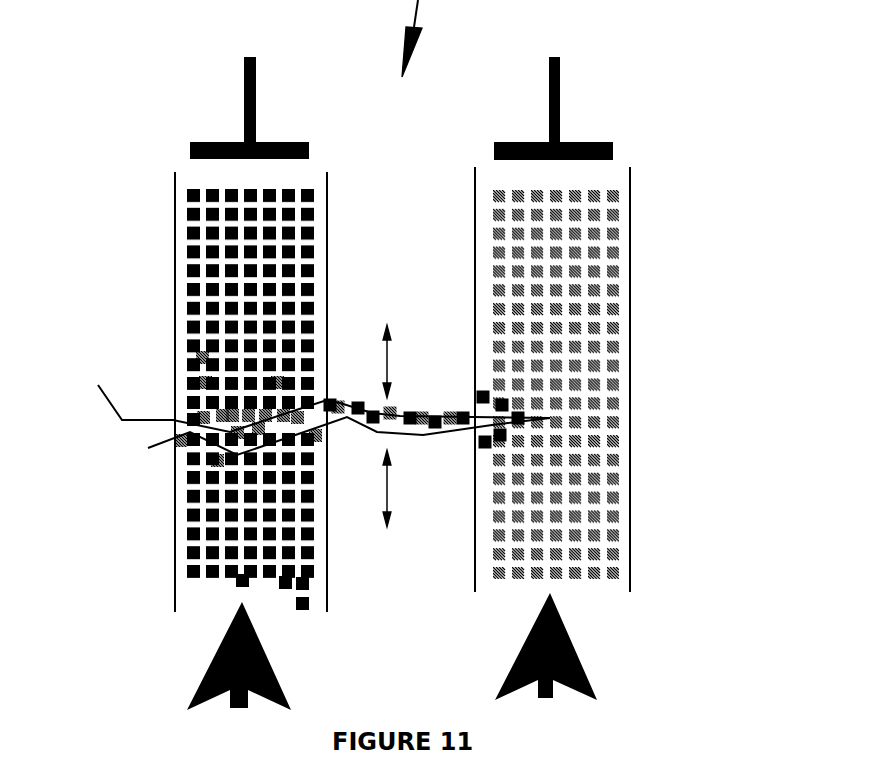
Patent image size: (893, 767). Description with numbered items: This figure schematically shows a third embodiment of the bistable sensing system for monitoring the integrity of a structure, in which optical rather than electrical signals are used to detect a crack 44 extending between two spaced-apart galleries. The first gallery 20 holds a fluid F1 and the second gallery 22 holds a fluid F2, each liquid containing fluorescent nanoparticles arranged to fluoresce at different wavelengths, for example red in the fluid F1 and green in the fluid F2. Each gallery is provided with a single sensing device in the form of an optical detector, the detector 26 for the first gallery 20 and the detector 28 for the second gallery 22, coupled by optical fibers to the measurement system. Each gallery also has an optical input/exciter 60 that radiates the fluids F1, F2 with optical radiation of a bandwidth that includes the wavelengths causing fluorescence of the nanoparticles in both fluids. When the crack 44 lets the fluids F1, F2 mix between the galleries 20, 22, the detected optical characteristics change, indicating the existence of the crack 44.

The first gallery 20 is at (175, 333).
The second gallery 22 is at (630, 237).
The sensing device 26 is at (228, 132).
The sensing device 28 is at (583, 133).
The crack 44 is at (398, 410).
The optical input/exciter 60 is at (197, 685).
The fluid F1 is at (210, 212).
The fluid F2 is at (590, 365).